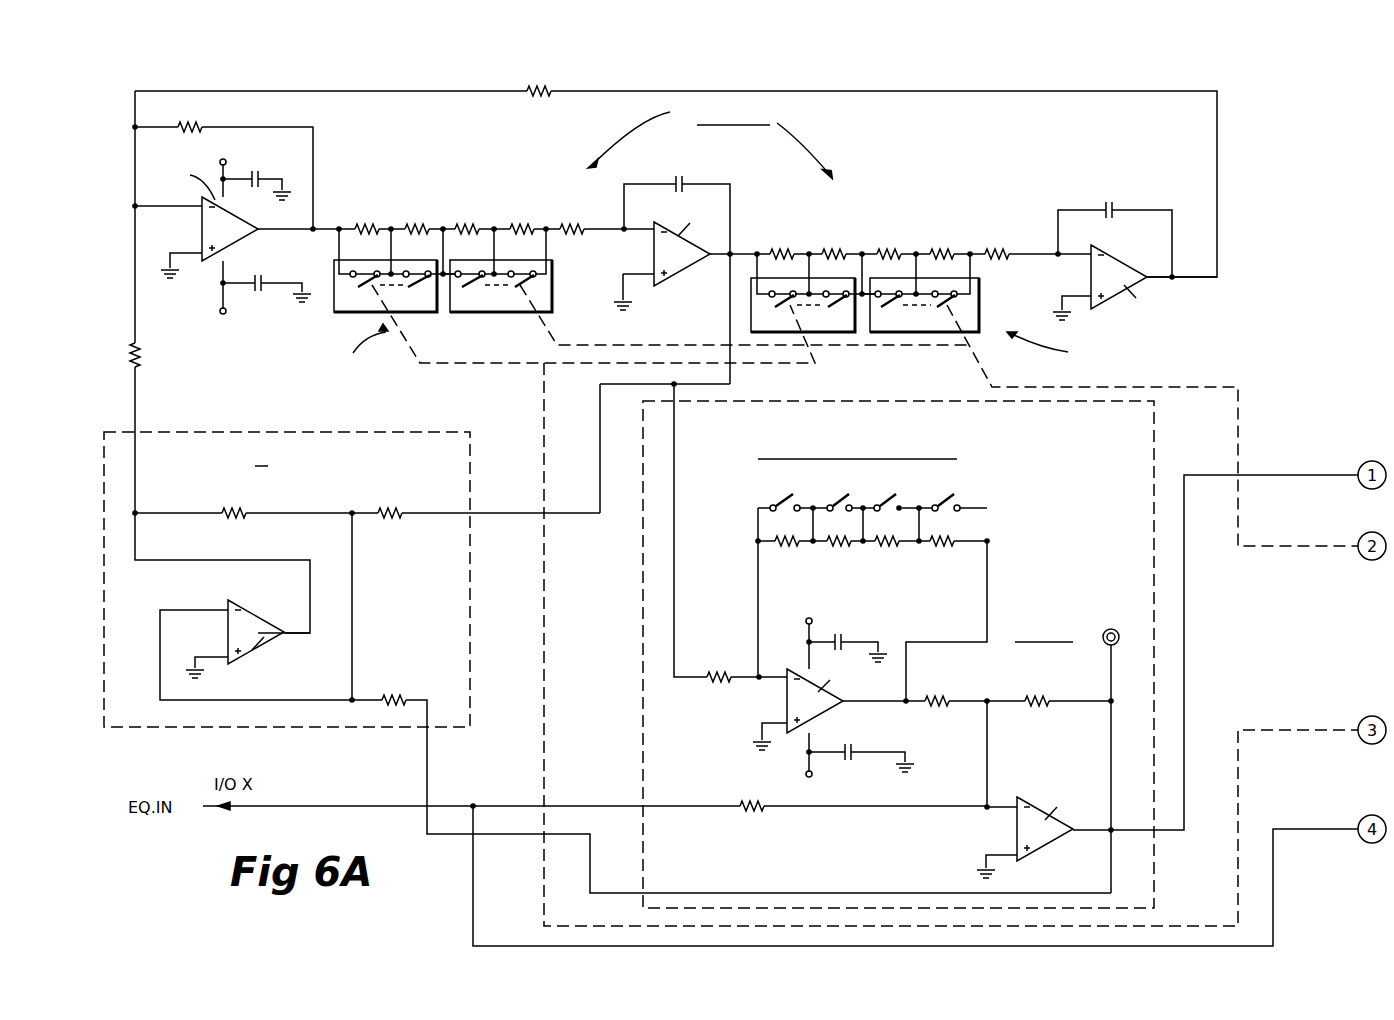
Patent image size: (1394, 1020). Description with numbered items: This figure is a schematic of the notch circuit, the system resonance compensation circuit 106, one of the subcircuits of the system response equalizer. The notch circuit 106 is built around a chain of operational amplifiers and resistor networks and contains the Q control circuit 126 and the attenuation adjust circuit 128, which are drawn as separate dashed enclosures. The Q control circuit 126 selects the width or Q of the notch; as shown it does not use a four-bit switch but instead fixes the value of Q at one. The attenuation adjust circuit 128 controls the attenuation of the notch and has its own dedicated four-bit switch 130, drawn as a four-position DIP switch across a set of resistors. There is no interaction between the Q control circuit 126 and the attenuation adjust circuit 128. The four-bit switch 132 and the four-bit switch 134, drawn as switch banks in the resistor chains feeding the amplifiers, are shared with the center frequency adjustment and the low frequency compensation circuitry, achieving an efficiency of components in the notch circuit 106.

The system resonance compensation circuit 106 is at (687, 75).
The Q control circuit 126 is at (470, 727).
The attenuation adjust circuit 128 is at (645, 743).
The four-bit switch 130 is at (977, 497).
The four-bit switch 132 is at (425, 320).
The four-bit switch 134 is at (487, 312).